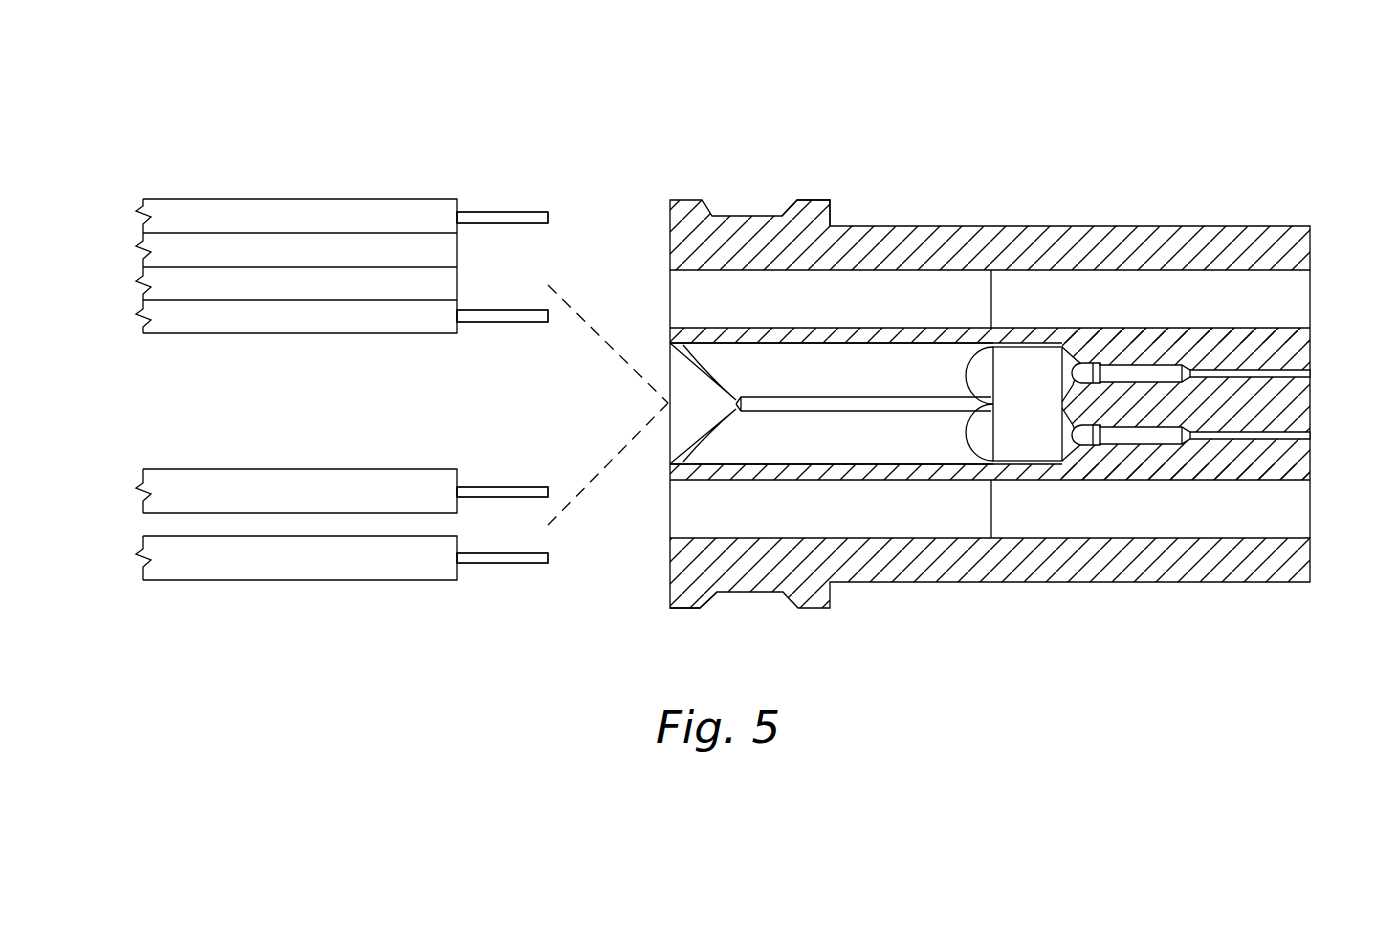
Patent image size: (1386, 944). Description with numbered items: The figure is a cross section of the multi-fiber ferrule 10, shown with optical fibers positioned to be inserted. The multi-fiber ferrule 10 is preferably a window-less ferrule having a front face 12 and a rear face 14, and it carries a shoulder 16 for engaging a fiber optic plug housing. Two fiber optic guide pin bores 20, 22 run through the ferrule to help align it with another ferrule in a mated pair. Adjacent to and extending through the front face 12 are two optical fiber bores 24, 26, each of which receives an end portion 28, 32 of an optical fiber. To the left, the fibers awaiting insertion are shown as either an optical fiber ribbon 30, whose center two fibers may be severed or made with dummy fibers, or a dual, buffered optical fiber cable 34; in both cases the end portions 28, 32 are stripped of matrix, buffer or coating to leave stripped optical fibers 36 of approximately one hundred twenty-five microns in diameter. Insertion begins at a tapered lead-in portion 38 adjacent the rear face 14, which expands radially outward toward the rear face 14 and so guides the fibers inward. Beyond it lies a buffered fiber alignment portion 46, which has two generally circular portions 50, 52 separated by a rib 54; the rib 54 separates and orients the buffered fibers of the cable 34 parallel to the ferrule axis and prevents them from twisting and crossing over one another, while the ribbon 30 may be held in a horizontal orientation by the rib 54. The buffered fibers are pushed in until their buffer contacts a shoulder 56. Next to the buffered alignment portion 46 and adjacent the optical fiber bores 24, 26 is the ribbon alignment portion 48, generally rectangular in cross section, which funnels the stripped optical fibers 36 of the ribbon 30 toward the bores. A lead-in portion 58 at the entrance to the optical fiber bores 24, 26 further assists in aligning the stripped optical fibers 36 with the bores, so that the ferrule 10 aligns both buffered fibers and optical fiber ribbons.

The multi-fiber ferrule 10 is at (987, 377).
The front face 12 is at (1312, 558).
The rear face 14 is at (668, 583).
The shoulder 16 is at (818, 197).
The fiber optic guide pin bore 20 is at (668, 284).
The fiber optic guide pin bore 22 is at (668, 521).
The optical fiber bore 24 is at (1300, 373).
The optical fiber bore 26 is at (1300, 437).
The end portion 28 is at (550, 188).
The optical fiber ribbon 30 is at (318, 181).
The end portion 32 is at (548, 466).
The dual buffered optical fiber cable 34 is at (313, 456).
The stripped optical fibers 36 is at (478, 223).
The tapered lead-in portion 38 is at (670, 458).
The buffered fiber alignment portion 46 is at (732, 607).
The ribbon alignment portion 48 is at (1115, 607).
The generally circular portion 50 is at (876, 384).
The generally circular portion 52 is at (876, 454).
The rib 54 is at (817, 396).
The shoulder 56 is at (983, 370).
The lead-in portion 58 is at (1062, 347).